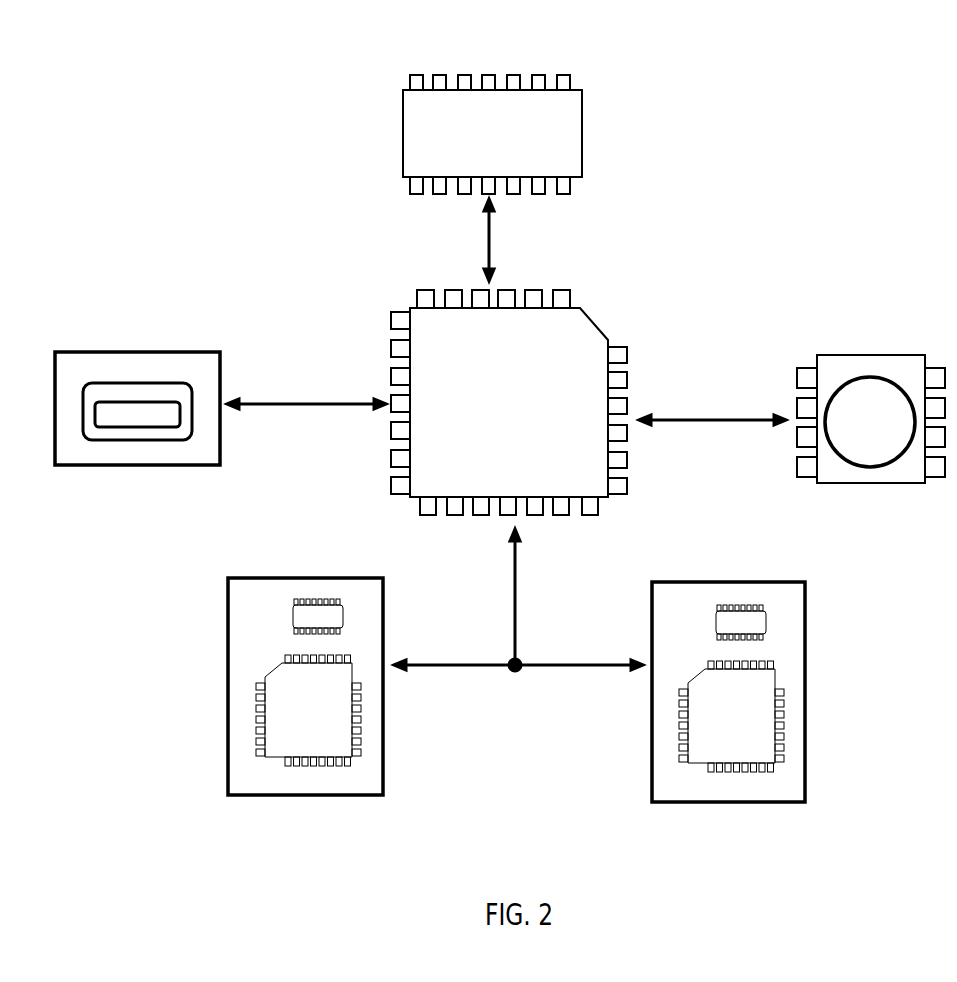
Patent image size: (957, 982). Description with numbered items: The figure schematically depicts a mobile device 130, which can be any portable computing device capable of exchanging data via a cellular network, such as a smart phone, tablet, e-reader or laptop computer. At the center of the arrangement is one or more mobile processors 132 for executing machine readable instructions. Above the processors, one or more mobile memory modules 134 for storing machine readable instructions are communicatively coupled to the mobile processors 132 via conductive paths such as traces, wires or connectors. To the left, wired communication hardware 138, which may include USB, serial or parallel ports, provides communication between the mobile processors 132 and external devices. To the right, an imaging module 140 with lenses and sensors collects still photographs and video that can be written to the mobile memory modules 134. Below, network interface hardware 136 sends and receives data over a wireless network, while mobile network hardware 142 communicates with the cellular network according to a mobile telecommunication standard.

The mobile device 130 is at (276, 113).
The mobile processor 132 is at (425, 300).
The mobile memory module 134 is at (490, 86).
The network interface hardware 136 is at (263, 590).
The wired communication hardware 138 is at (85, 362).
The imaging module 140 is at (898, 365).
The mobile network hardware 142 is at (755, 592).